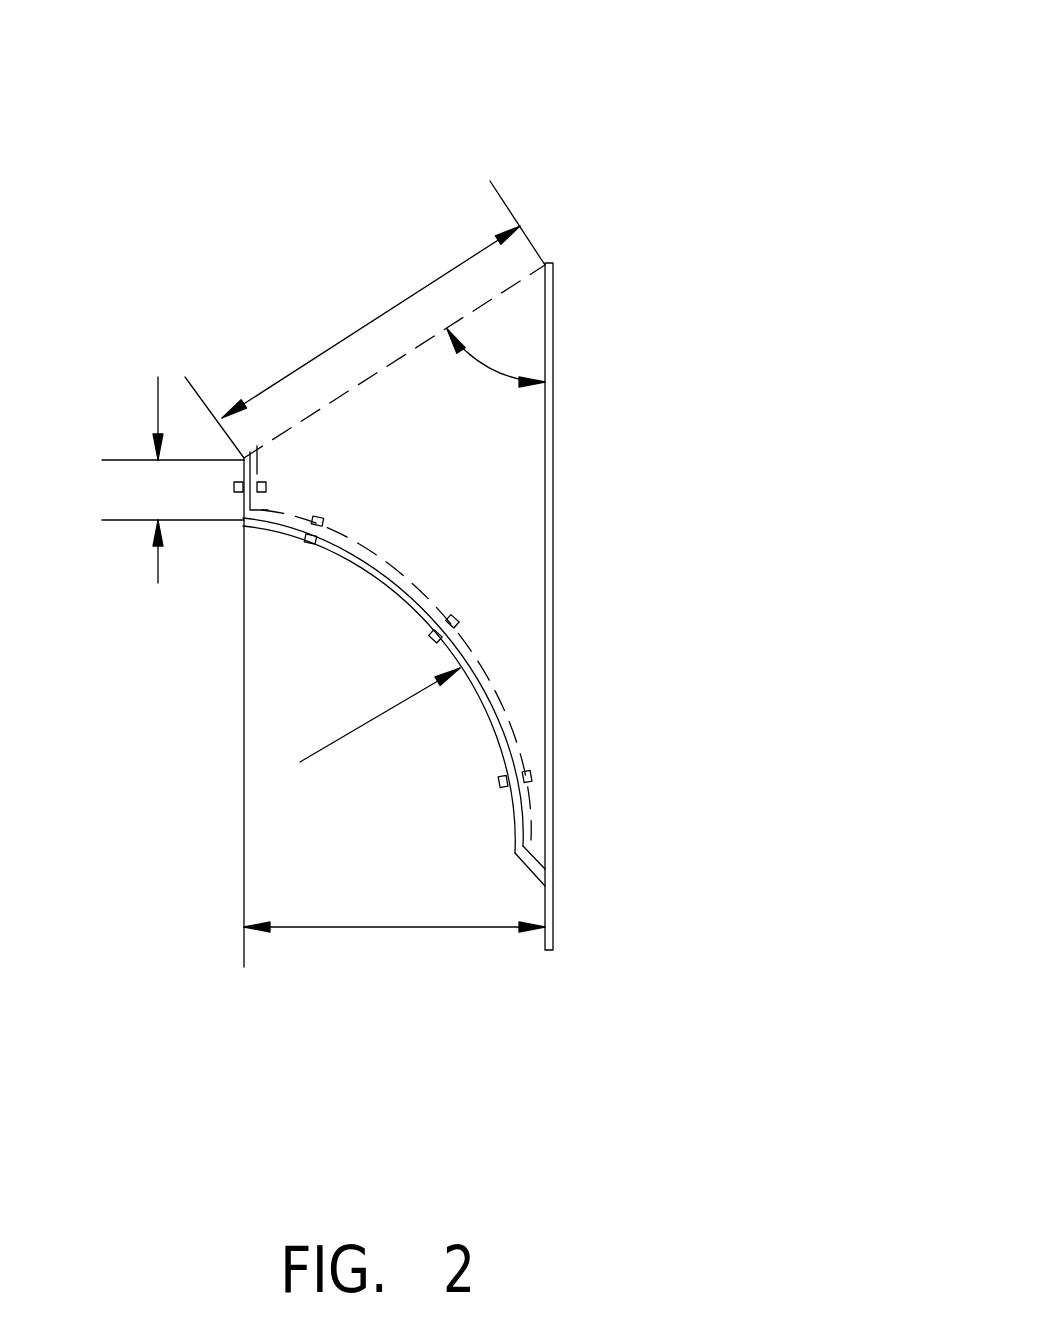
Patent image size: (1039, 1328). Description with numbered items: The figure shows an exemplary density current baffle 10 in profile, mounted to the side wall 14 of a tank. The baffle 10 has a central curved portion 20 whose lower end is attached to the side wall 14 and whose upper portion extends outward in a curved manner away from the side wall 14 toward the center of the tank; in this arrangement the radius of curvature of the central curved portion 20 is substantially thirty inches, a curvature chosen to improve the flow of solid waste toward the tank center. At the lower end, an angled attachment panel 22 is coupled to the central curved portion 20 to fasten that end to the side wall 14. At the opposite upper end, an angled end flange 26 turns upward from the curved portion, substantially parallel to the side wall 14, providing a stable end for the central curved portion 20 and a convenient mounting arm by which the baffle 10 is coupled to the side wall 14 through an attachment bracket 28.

The density current baffle 10 is at (470, 148).
The side wall 14 is at (553, 559).
The central curved portion 20 is at (387, 585).
The angled attachment panel 22 is at (530, 872).
The angled end flange 26 is at (243, 506).
The attachment bracket 28 is at (317, 410).